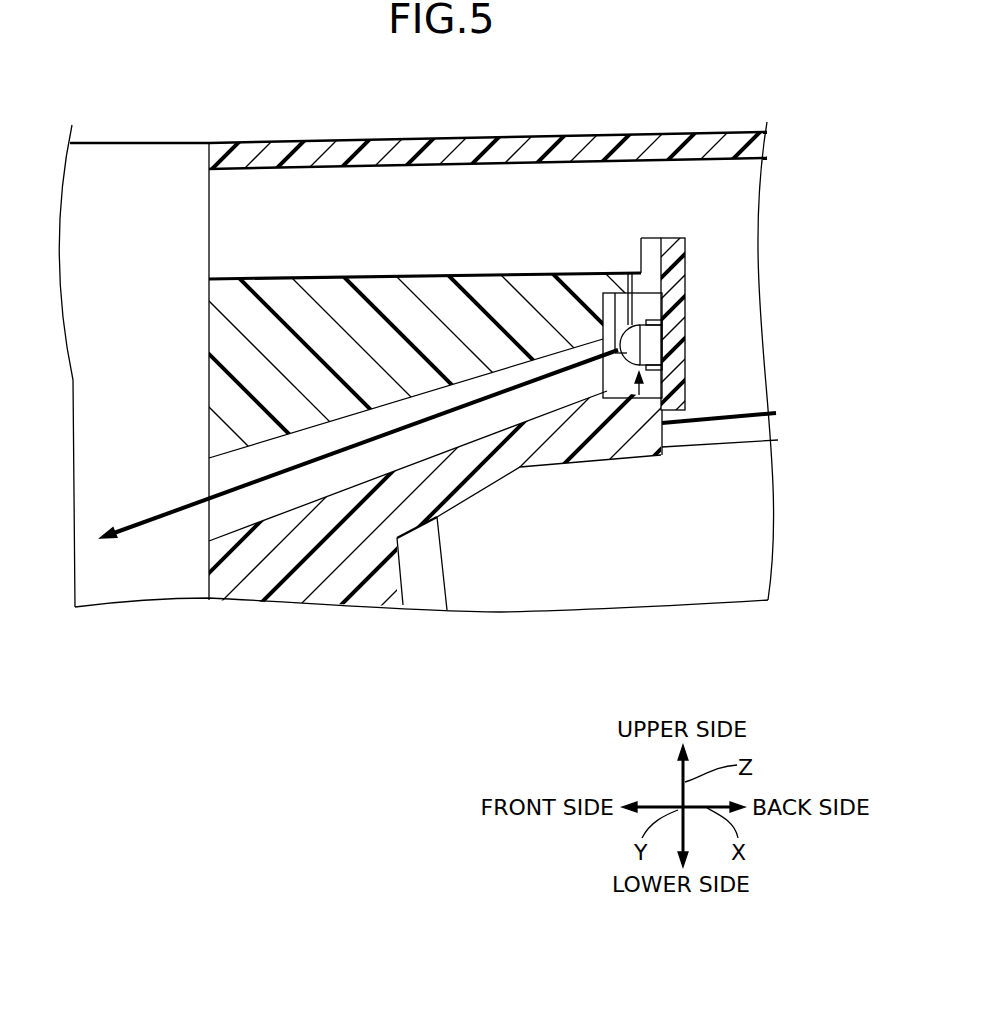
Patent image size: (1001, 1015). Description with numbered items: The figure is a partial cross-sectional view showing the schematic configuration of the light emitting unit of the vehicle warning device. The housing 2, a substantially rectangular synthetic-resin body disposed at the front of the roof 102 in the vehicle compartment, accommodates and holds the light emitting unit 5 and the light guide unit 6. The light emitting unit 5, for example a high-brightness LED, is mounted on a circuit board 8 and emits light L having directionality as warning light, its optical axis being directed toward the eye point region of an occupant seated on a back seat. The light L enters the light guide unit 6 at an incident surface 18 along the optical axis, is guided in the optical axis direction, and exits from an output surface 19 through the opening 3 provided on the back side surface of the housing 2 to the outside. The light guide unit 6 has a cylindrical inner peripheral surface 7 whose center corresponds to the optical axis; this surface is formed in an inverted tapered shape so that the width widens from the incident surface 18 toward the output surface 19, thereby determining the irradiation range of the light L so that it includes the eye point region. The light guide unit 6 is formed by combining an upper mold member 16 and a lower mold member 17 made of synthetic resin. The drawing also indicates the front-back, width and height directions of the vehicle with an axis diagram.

The roof 102 is at (148, 146).
The upper mold member 16 is at (416, 276).
The housing 2 is at (576, 162).
The circuit board 8 is at (685, 253).
The incident surface 18 is at (639, 396).
The light emitting unit 5 is at (610, 368).
The light L is at (153, 530).
The output surface 19 is at (209, 482).
The opening 3 is at (209, 541).
The lower mold member 17 is at (209, 573).
The light guide unit 6 is at (284, 493).
The inner peripheral surface 7 is at (383, 407).